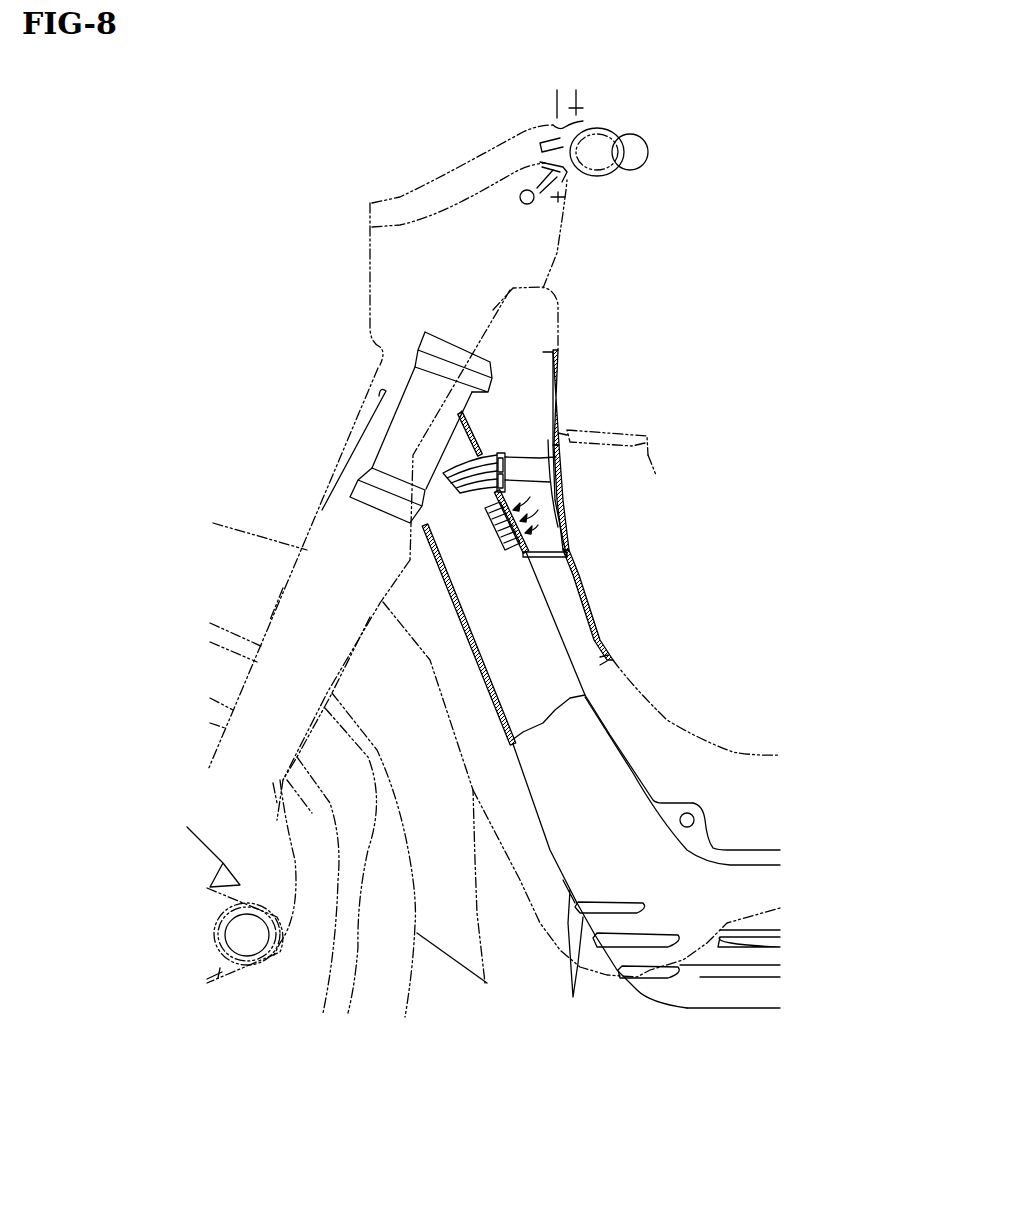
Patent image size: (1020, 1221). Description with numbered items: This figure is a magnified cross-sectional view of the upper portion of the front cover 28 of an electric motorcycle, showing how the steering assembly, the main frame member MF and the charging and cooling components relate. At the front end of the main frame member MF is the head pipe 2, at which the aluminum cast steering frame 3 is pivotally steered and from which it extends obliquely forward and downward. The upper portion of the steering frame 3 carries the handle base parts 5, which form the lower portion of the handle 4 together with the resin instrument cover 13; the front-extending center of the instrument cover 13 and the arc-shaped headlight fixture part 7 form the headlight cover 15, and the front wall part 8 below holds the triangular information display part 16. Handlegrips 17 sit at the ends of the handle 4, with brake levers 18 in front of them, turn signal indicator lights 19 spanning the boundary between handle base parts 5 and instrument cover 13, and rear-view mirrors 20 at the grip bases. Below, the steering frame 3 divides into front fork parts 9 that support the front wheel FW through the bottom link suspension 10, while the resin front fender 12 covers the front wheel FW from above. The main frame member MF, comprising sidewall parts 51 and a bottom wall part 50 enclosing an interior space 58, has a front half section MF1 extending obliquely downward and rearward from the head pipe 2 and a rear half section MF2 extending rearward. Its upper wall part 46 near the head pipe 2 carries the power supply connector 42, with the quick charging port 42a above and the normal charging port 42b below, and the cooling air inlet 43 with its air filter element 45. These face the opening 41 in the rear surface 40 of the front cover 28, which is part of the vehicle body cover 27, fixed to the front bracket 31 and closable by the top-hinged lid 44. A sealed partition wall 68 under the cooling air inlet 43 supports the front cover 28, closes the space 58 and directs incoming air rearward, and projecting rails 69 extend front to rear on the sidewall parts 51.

The head pipe 2 is at (407, 390).
The steering frame 3 is at (555, 250).
The handle 4 is at (593, 124).
The handle base part 5 is at (561, 198).
The headlight fixture part 7 is at (372, 268).
The front wall part 8 is at (324, 497).
The front fork part 9 is at (280, 600).
The bottom link suspension 10 is at (223, 977).
The front fender 12 is at (240, 522).
The instrument cover 13 is at (497, 150).
The headlight cover 15 is at (415, 191).
The information display part 16 is at (362, 410).
The handlegrip 17 is at (647, 153).
The brake lever 18 is at (520, 203).
The turn signal indicator light 19 is at (550, 140).
The rear-view mirror 20 is at (582, 108).
The vehicle body cover 27 is at (587, 598).
The front cover 28 is at (601, 630).
The front bracket 31 is at (693, 813).
The rear surface 40 is at (560, 408).
The opening 41 is at (567, 525).
The power supply connector 42 is at (505, 457).
The quick charging port 42a is at (505, 462).
The normal charging port 42b is at (505, 482).
The cooling air inlet 43 is at (510, 552).
The lid 44 is at (615, 466).
The air filter element 45 is at (500, 537).
The upper wall part 46 is at (473, 440).
The bottom wall part 50 is at (490, 687).
The sidewall part 51 is at (766, 898).
The space 58 is at (531, 659).
The partition wall 68 is at (543, 551).
The projecting rail 69 is at (573, 997).
The front wheel FW is at (413, 993).
The main frame member MF is at (469, 420).
The front half section MF1 is at (612, 735).
The rear half section MF2 is at (745, 848).